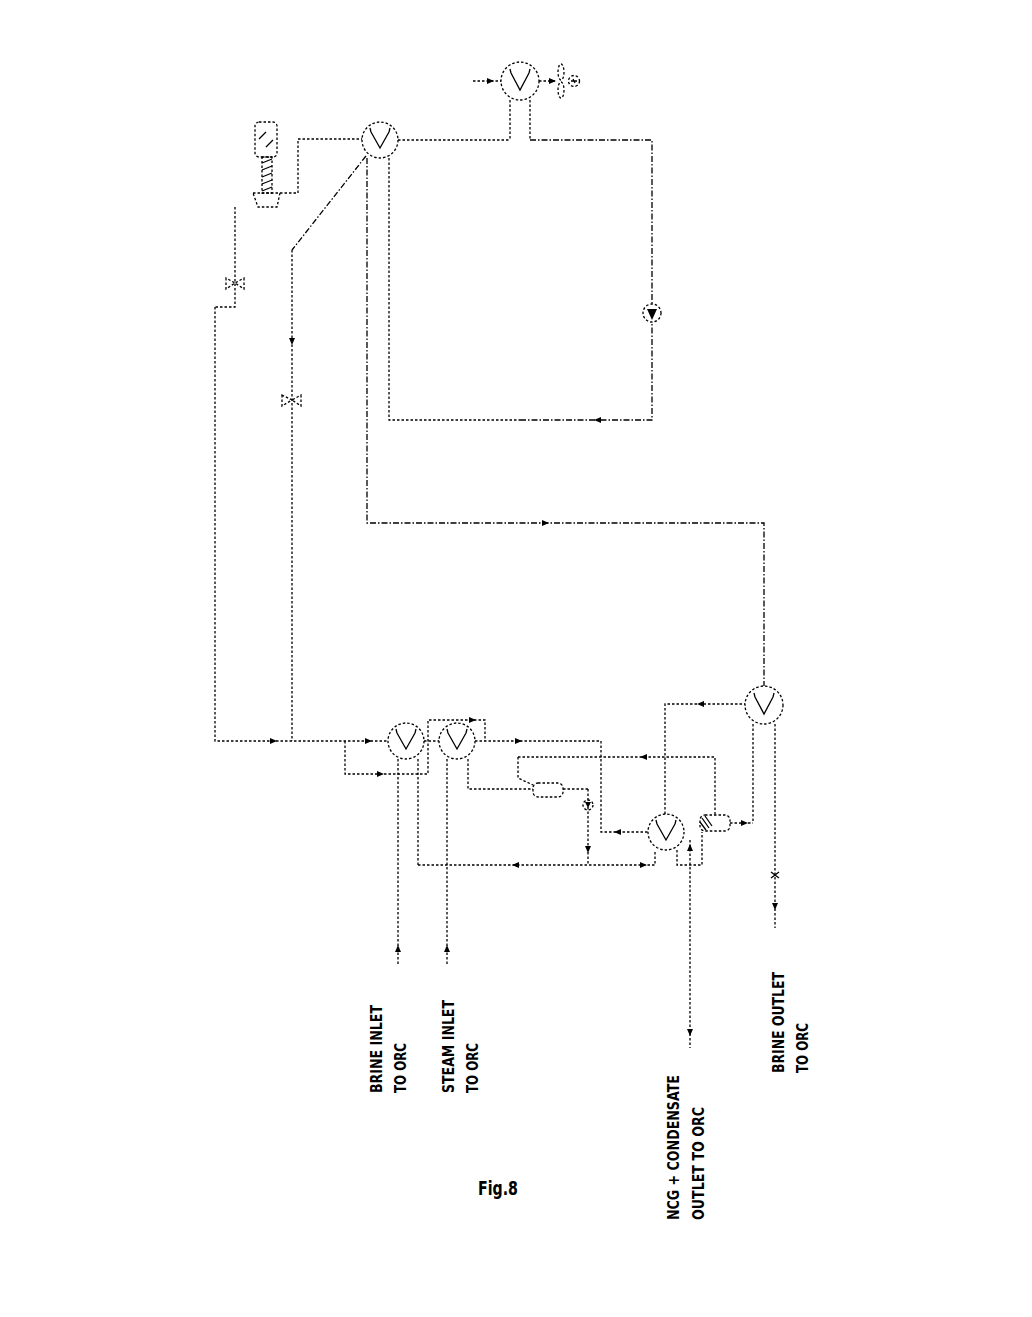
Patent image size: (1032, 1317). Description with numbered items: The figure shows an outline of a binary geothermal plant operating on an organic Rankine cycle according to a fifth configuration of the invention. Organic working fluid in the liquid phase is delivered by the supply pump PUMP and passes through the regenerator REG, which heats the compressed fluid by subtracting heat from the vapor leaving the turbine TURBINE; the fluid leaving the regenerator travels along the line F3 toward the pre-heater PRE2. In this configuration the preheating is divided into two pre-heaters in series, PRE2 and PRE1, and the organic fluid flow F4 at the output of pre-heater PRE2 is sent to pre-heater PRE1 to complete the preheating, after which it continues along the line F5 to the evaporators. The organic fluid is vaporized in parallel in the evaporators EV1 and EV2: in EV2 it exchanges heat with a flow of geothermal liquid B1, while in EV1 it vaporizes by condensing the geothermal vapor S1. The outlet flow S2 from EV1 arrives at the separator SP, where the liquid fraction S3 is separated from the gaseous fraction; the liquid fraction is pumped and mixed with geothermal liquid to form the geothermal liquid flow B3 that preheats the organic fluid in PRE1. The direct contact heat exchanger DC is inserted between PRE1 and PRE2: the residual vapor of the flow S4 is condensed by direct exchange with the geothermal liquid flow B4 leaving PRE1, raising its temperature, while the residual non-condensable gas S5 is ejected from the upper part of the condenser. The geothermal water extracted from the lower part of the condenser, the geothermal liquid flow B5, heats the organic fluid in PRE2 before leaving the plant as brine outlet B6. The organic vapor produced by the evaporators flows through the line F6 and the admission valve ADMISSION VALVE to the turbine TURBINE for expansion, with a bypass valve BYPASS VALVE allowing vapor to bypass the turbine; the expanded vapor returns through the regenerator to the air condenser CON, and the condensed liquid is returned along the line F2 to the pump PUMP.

The expansion turbine TURBINE is at (253, 193).
The admission valve ADMISSION VALVE is at (222, 284).
The bypass valve BYPASS VALVE is at (280, 397).
The regenerator REG is at (378, 122).
The condenser CON is at (524, 62).
The supply pump PUMP is at (661, 310).
The working fluid line F6 is at (320, 139).
The working fluid line F2 is at (469, 418).
The working fluid line F3 is at (478, 527).
The organic fluid flow F4 is at (680, 703).
The working fluid line F5 is at (551, 741).
The evaporator EV1 is at (457, 722).
The evaporator EV2 is at (406, 722).
The pre-heater PRE1 is at (672, 815).
The pre-heater PRE2 is at (783, 706).
The direct contact heat exchanger DC is at (731, 823).
The separator SP is at (545, 797).
The geothermal vapor S1 is at (446, 915).
The outlet flow S2 is at (466, 791).
The liquid fraction S3 is at (585, 830).
The flow S4 is at (645, 755).
The flow S5 is at (688, 937).
The geothermal liquid B1 is at (396, 938).
The geothermal liquid flow B3 is at (597, 868).
The geothermal liquid flow B4 is at (704, 868).
The geothermal liquid flow B5 is at (752, 737).
The brine outlet line B6 is at (778, 868).